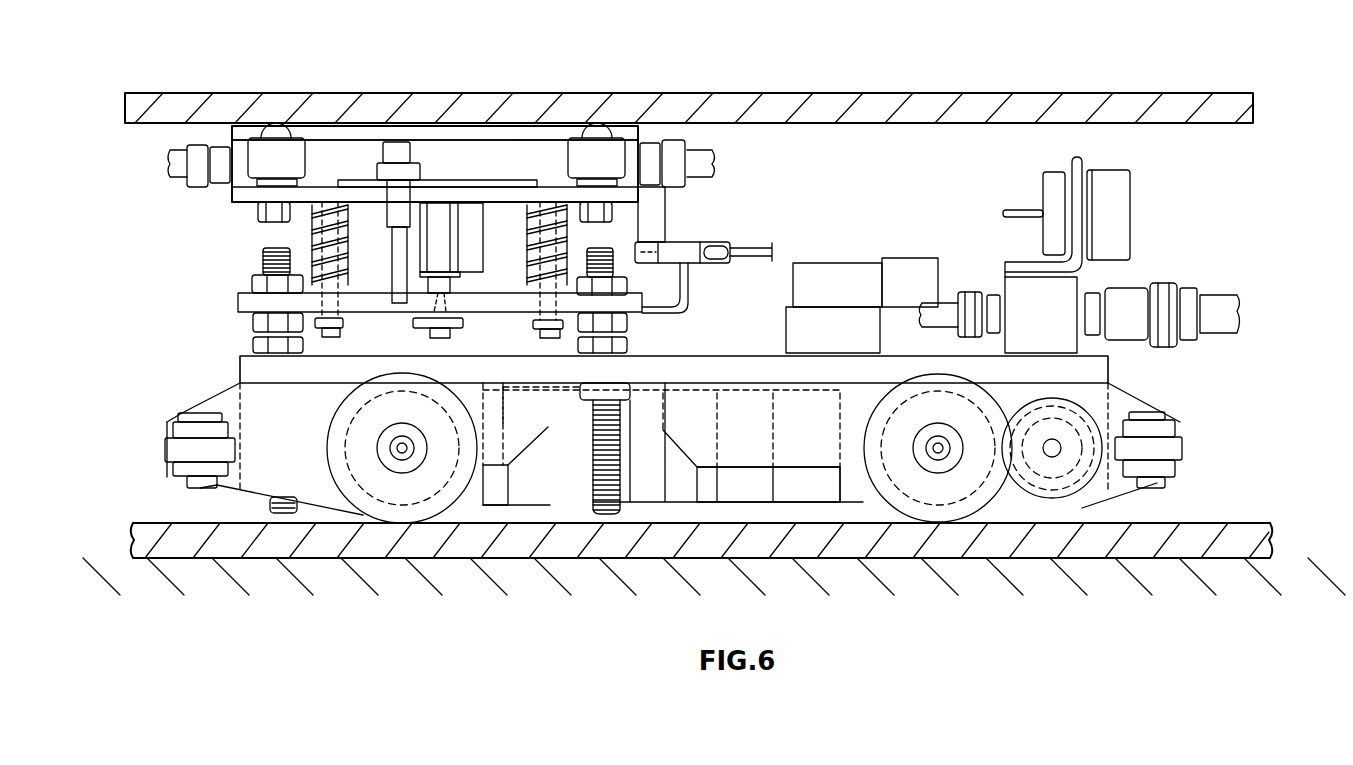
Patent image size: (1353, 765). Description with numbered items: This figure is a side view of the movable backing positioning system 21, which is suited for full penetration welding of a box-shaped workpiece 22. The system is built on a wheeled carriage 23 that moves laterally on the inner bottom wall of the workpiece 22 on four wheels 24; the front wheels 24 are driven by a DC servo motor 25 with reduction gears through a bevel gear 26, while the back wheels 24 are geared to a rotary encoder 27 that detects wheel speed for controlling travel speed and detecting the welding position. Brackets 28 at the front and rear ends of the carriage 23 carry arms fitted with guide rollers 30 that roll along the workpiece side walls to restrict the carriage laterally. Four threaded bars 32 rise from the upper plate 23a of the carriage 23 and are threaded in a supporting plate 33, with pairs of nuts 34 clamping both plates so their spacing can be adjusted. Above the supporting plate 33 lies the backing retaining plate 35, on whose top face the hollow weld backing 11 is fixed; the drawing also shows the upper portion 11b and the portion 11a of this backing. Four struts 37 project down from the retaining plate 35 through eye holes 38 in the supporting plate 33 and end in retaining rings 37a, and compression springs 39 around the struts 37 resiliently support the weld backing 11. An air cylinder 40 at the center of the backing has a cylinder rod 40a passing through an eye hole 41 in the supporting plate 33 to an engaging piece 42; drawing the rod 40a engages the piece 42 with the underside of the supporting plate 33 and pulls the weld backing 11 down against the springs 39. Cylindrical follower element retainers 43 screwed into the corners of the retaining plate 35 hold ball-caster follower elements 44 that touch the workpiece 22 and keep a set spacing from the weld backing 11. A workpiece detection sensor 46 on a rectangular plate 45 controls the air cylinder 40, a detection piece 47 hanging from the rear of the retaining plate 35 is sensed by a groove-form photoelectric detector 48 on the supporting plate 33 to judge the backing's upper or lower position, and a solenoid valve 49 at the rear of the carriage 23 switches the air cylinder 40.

The weld backing 11 is at (560, 122).
The frame web 11a is at (323, 155).
The frame upper flange 11b is at (313, 130).
The movable backing positioning system 21 is at (1250, 216).
The workpiece 22 is at (1233, 124).
The wheeled carriage 23 is at (203, 393).
The upper plate 23a is at (1097, 367).
The wheels 24 is at (352, 502).
The DC servo motor 25 is at (692, 503).
The bevel gear 26 is at (447, 507).
The rotary encoder 27 is at (1097, 500).
The brackets 28 is at (233, 485).
The guide roller 30 is at (175, 448).
The threaded bars 32 is at (263, 507).
The supporting plate 33 is at (238, 300).
The nuts 34 is at (257, 283).
The backing retaining plate 35 is at (248, 194).
The struts 37 is at (320, 222).
The retaining ring 37a is at (344, 323).
The eye hole 38 is at (330, 262).
The compression springs 39 is at (357, 199).
The air cylinder 40 is at (467, 213).
The cylinder rod 40a is at (448, 283).
The eye hole 41 is at (448, 298).
The engaging piece 42 is at (463, 320).
The follower element retainers 43 is at (252, 151).
The follower element 44 is at (274, 128).
The rectangular plate 45 is at (432, 182).
The workpiece detection sensor 46 is at (402, 150).
The detection piece 47 is at (656, 205).
The photoelectric detector 48 is at (683, 252).
The solenoid valve 49 is at (848, 275).